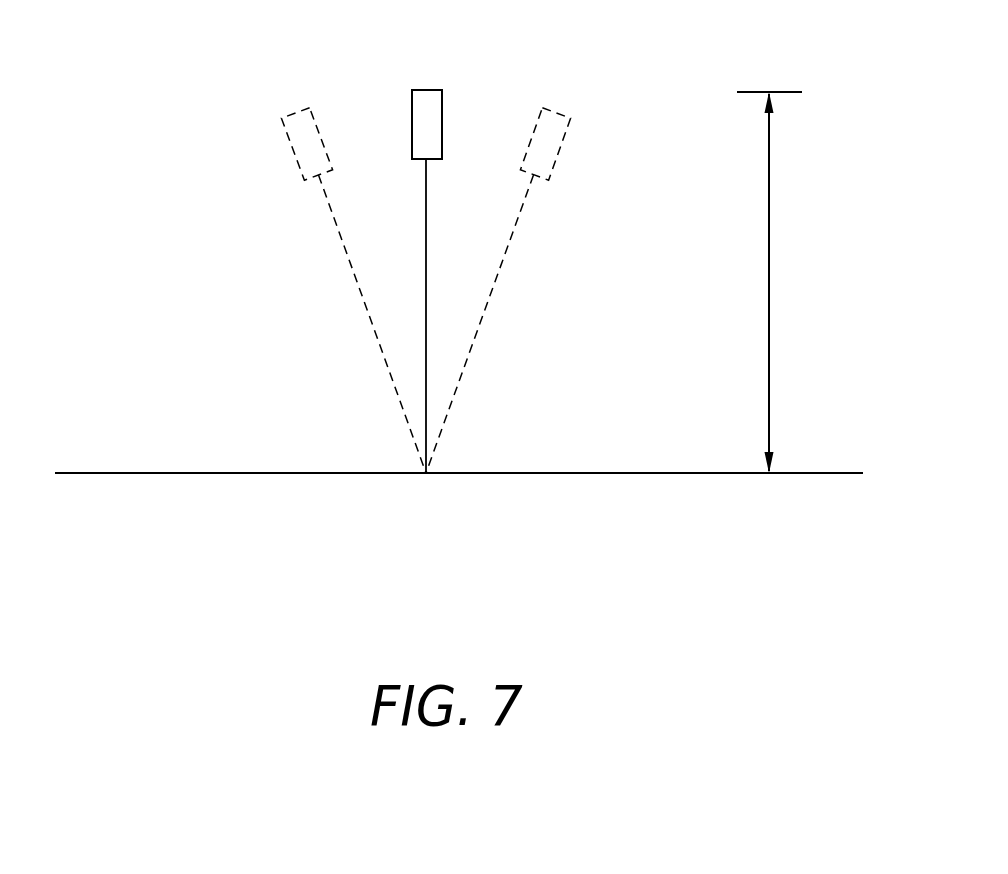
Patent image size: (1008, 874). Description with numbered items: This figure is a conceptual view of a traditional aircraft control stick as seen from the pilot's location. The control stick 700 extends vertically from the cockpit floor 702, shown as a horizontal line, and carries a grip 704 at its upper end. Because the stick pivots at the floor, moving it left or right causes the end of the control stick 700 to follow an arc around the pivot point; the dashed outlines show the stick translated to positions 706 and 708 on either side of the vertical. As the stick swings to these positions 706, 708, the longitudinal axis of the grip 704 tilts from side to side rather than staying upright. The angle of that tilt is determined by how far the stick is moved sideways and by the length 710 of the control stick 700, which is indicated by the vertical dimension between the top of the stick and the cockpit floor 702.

The control stick 700 is at (426, 245).
The cockpit floor 702 is at (638, 475).
The grip 704 is at (412, 127).
The position 706 is at (300, 211).
The position 708 is at (555, 211).
The length 710 is at (770, 260).